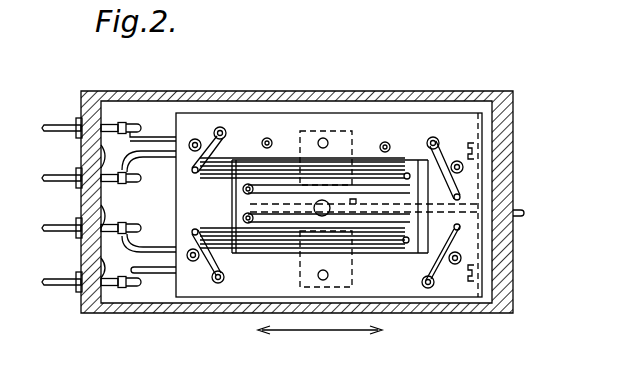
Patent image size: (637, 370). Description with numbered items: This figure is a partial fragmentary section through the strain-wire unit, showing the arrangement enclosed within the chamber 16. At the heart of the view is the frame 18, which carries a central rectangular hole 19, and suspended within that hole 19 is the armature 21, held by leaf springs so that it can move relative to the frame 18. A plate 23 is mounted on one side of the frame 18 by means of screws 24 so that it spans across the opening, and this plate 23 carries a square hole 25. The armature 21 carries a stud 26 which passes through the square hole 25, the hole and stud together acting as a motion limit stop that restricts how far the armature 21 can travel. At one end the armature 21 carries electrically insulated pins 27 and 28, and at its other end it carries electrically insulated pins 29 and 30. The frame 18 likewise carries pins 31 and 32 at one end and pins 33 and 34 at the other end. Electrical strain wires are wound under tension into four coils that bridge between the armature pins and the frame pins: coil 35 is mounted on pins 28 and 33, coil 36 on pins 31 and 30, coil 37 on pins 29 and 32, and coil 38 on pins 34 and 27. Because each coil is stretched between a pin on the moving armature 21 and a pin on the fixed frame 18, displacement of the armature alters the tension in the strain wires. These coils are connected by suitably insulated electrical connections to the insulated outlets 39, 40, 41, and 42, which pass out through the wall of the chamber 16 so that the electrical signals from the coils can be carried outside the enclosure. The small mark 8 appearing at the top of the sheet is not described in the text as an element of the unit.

The sheet mark 8 is at (561, 6).
The chamber 16 is at (306, 86).
The frame 18 is at (362, 123).
The central rectangular hole 19 is at (401, 158).
The armature 21 is at (364, 208).
The plate 23 is at (296, 133).
The screws 24 is at (323, 137).
The square hole 25 is at (303, 210).
The stud 26 is at (322, 214).
The electrically insulated pin 27 is at (406, 243).
The electrically insulated pin 28 is at (408, 176).
The electrically insulated pin 29 is at (243, 218).
The electrically insulated pin 30 is at (243, 190).
The pin 31 is at (459, 197).
The pin 32 is at (460, 228).
The pin 33 is at (192, 170).
The pin 34 is at (193, 232).
The coil 35 is at (221, 168).
The coil 36 is at (240, 198).
The coil 37 is at (268, 218).
The coil 38 is at (262, 245).
The insulated outlet 39 is at (113, 118).
The insulated outlet 40 is at (100, 153).
The insulated outlet 41 is at (100, 208).
The insulated outlet 42 is at (100, 258).